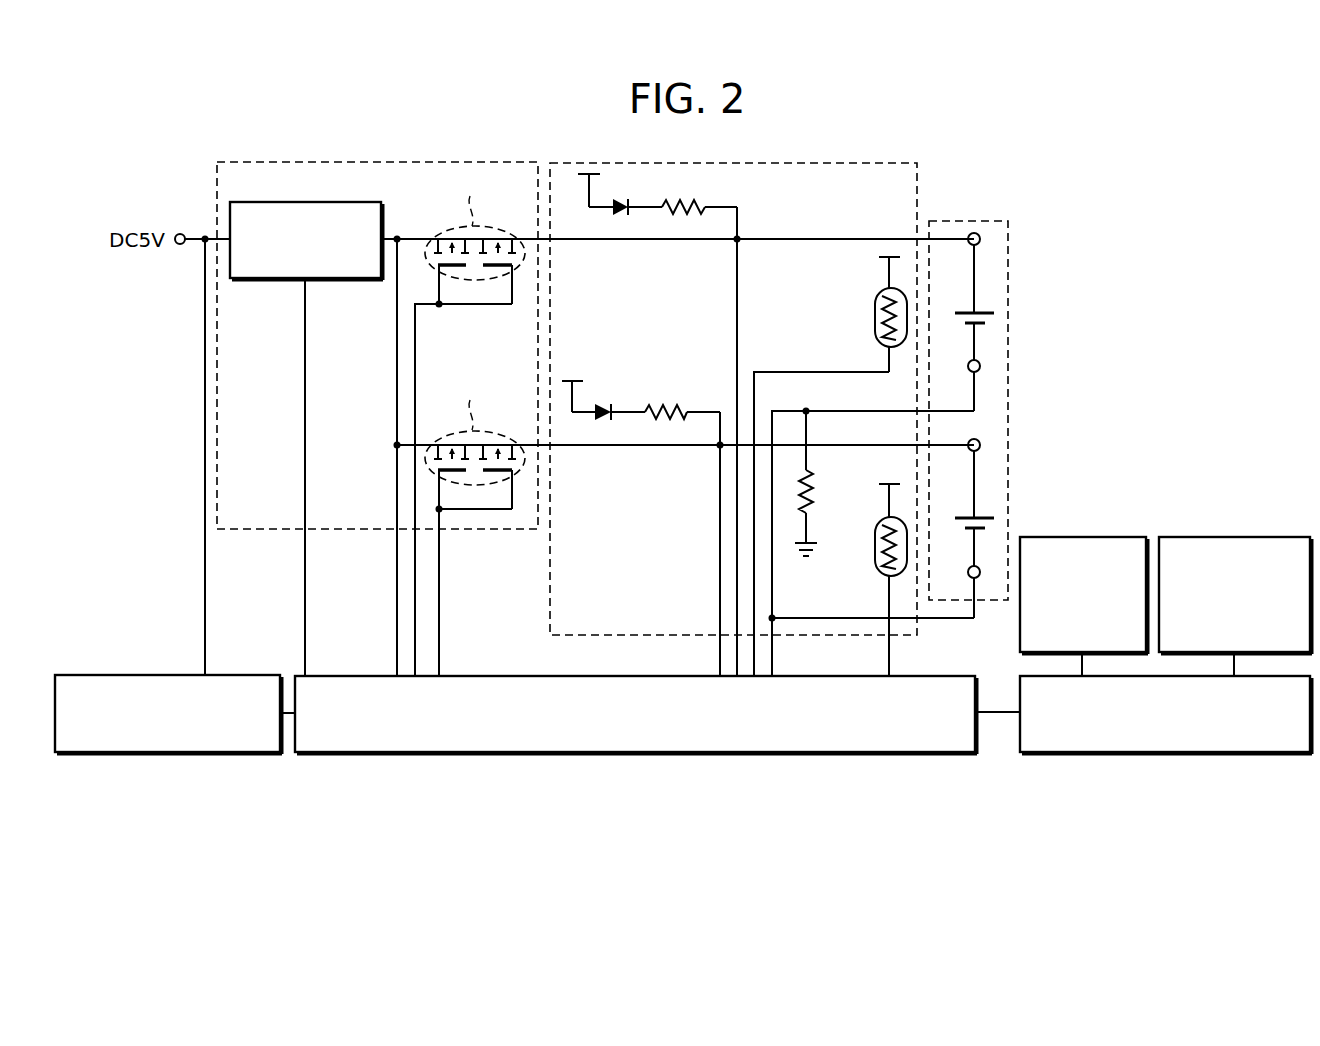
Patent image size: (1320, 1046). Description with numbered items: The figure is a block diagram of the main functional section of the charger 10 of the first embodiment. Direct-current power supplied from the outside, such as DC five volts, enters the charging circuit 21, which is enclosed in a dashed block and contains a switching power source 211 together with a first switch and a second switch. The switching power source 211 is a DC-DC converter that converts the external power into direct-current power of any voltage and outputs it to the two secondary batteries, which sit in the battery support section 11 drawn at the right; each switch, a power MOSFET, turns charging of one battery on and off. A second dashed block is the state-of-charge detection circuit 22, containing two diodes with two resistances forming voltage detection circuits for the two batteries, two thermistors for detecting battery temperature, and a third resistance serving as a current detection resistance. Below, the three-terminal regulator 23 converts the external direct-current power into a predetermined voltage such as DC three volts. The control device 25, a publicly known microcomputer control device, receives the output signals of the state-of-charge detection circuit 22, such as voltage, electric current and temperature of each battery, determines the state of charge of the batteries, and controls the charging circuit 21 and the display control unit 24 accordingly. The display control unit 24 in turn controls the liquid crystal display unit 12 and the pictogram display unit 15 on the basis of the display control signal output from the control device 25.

The charger 10 is at (1052, 191).
The battery support section 11 is at (1010, 238).
The liquid crystal display unit 12 is at (1128, 537).
The pictogram display unit 15 is at (1290, 537).
The charging circuit 21 is at (217, 177).
The switching power source 211 is at (291, 202).
The state-of-charge detection circuit 22 is at (918, 181).
The three-terminal regulator 23 is at (76, 675).
The display control unit 24 is at (1285, 753).
The control device 25 is at (950, 753).